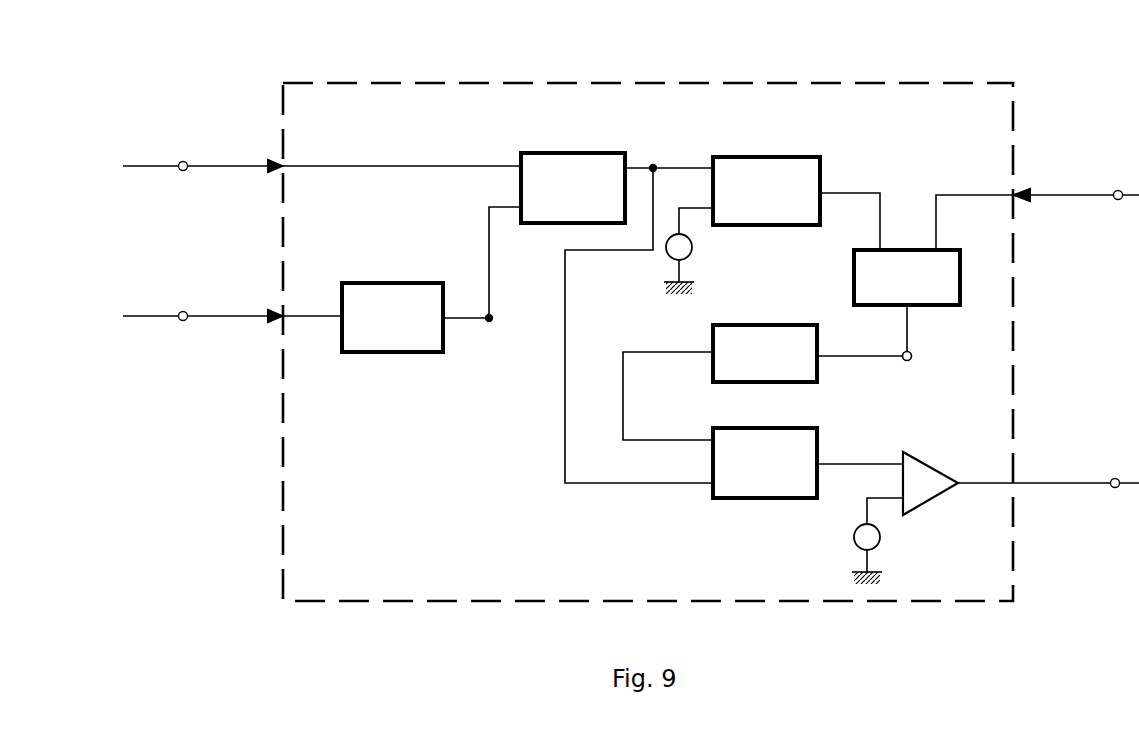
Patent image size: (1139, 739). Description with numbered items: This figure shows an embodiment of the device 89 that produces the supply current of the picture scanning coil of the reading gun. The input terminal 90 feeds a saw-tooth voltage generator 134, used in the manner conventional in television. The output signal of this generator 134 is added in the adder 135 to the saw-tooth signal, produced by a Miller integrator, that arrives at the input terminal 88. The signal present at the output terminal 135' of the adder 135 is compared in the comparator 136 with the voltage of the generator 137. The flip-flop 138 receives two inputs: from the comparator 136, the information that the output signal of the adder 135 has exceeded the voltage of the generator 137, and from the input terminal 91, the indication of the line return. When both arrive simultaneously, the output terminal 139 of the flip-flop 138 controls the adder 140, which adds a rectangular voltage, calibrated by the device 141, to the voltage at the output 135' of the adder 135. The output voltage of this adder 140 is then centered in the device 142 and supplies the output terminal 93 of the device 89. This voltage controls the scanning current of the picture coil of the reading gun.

The input terminal 88 is at (183, 157).
The device for producing the picture scanning coil current 89 is at (952, 112).
The input terminal 90 is at (183, 308).
The input terminal 91 is at (1037, 180).
The output terminal 93 is at (1110, 478).
The saw-tooth voltage generator 134 is at (392, 352).
The adder 135 is at (607, 158).
The output terminal of the adder 135' is at (639, 304).
The comparator 136 is at (789, 167).
The generator 137 is at (661, 252).
The flip-flop 138 is at (901, 243).
The output terminal of the flip-flop 139 is at (912, 362).
The adder 140 is at (750, 488).
The calibrating device 141 is at (755, 320).
The centering device 142 is at (933, 492).